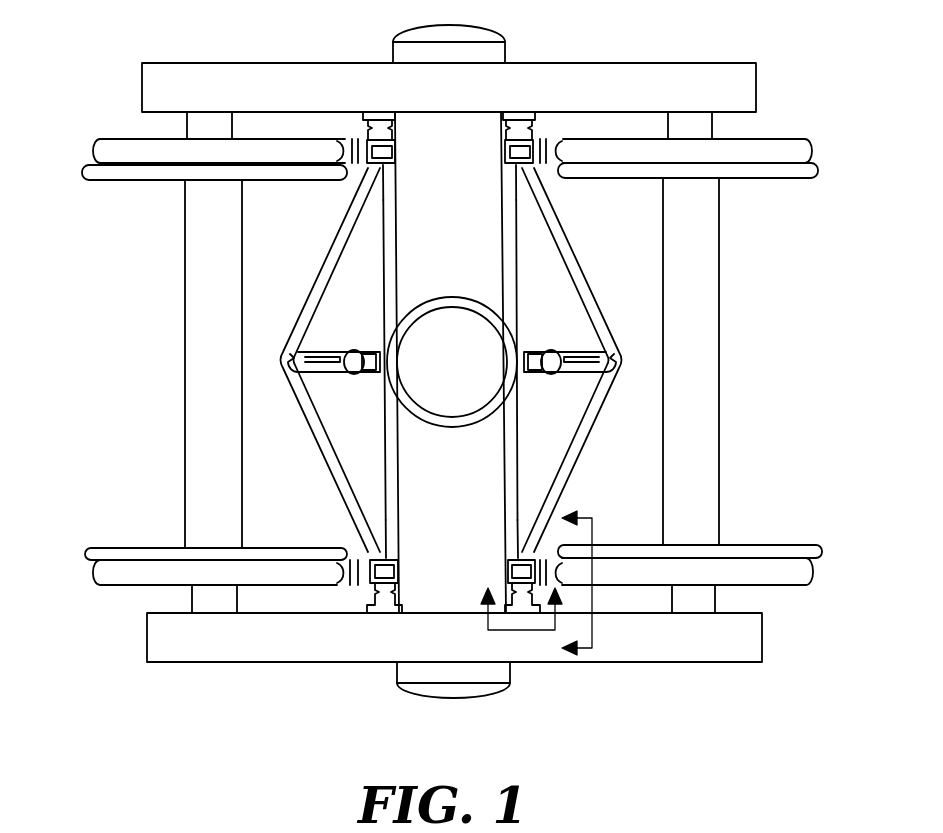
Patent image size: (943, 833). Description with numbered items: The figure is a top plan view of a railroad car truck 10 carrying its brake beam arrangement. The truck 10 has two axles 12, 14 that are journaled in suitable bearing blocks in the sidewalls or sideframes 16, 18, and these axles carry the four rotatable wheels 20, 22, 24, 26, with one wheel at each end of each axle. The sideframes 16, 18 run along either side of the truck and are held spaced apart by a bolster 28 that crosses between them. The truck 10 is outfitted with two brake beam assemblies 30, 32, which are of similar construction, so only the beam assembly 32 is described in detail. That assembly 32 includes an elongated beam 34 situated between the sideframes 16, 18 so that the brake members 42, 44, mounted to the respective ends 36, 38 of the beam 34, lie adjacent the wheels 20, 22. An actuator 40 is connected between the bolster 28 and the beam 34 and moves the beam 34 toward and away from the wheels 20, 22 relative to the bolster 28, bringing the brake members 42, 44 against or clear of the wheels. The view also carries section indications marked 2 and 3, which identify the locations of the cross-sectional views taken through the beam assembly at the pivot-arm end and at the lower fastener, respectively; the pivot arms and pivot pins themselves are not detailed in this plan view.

The railroad car truck 10 is at (788, 352).
The axle 12 is at (190, 313).
The axle 14 is at (713, 405).
The sideframe 16 is at (683, 72).
The sideframe 18 is at (178, 655).
The wheel 20 is at (100, 148).
The wheel 22 is at (98, 575).
The wheel 24 is at (800, 145).
The wheel 26 is at (808, 585).
The bolster 28 is at (458, 165).
The brake beam assembly 30 is at (322, 236).
The brake beam assembly 32 is at (583, 248).
The beam 34 is at (388, 290).
The beam end 36 is at (386, 195).
The beam end 38 is at (395, 537).
The actuator 40 is at (320, 372).
The brake member 42 is at (353, 140).
The brake member 44 is at (553, 565).
The section line 2- 2 is at (577, 584).
The section line 3- 3 is at (520, 609).